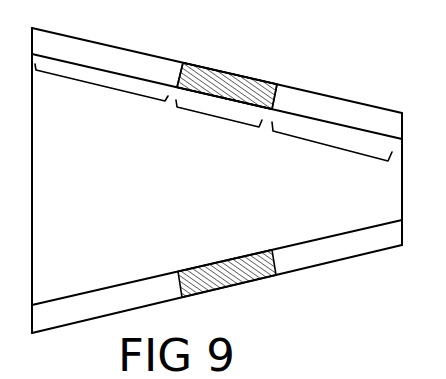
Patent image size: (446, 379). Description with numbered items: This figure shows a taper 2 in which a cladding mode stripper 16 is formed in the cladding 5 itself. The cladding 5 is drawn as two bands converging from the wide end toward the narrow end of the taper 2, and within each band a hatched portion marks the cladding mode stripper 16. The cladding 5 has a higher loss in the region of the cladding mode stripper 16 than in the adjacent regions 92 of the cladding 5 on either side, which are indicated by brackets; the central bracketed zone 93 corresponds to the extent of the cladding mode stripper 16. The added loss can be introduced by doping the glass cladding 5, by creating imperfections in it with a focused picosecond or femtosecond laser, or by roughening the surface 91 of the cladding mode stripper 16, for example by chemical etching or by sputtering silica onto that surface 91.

The taper 2 is at (73, 323).
The cladding 5 is at (348, 101).
The cladding mode stripper 16 is at (203, 67).
The surface of the cladding mode stripper 91 is at (232, 74).
The region of the cladding adjacent to the cladding mode stripper 92 is at (100, 86).
The middle zone 93 is at (217, 117).